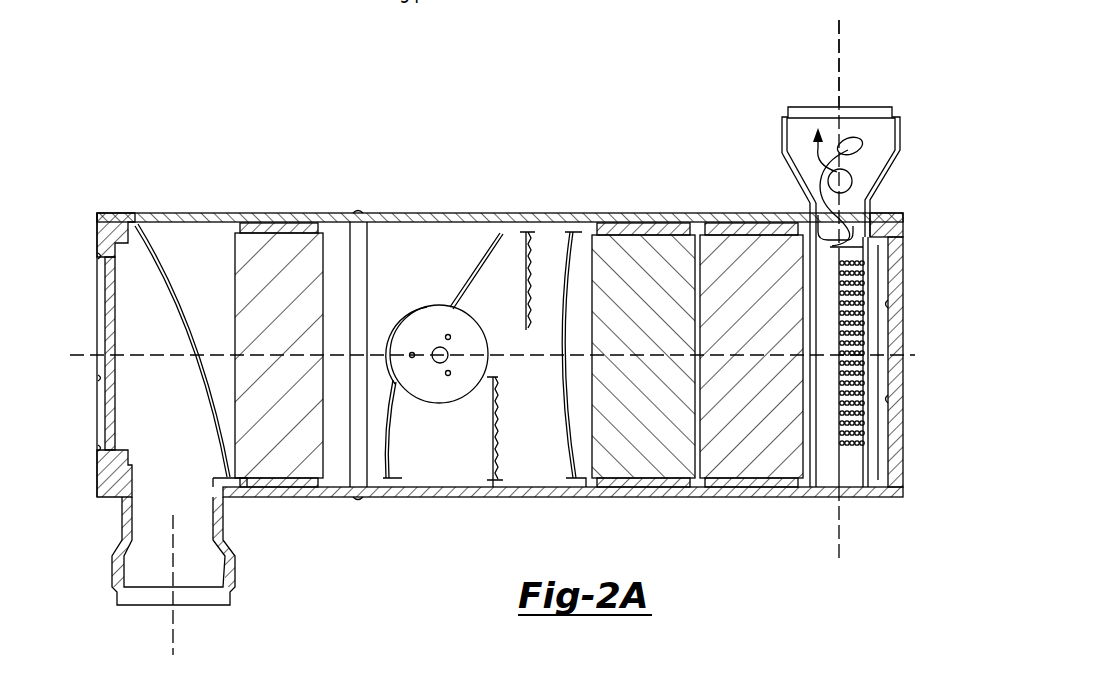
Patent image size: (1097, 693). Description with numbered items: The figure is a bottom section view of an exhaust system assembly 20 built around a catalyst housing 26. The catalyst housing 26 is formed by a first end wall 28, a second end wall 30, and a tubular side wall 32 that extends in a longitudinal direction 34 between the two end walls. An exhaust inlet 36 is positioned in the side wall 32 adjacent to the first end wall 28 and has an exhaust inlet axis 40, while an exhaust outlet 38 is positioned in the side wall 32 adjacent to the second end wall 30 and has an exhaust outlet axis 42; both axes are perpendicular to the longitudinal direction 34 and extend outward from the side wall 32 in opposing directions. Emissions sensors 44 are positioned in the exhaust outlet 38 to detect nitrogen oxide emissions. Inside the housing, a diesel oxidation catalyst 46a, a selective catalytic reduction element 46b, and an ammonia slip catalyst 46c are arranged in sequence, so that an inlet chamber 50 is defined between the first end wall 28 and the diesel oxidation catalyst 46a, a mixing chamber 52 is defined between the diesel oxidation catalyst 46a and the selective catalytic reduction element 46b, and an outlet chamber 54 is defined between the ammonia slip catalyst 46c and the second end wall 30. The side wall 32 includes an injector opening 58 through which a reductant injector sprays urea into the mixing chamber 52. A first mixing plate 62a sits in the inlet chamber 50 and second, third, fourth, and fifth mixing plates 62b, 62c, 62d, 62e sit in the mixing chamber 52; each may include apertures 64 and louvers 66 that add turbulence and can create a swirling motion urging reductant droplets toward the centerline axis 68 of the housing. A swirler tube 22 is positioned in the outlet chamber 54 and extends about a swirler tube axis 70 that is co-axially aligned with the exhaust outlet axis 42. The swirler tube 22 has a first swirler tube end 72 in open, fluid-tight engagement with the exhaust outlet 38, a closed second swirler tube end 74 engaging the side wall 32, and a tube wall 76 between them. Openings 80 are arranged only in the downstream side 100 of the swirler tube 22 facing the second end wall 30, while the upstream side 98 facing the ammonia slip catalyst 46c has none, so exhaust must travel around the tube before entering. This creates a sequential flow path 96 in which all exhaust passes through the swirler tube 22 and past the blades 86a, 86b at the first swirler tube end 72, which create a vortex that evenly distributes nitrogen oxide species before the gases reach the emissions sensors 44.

The exhaust system assembly 20 is at (186, 159).
The swirler tube 22 is at (822, 492).
The catalyst housing 26 is at (90, 210).
The first end wall 28 is at (104, 302).
The second end wall 30 is at (897, 332).
The side wall 32 is at (211, 213).
The longitudinal direction 34 is at (445, 541).
The exhaust inlet 36 is at (234, 558).
The exhaust outlet 38 is at (880, 190).
The exhaust inlet axis 40 is at (175, 620).
The exhaust outlet axis 42 is at (838, 38).
The swirler tube axis 70 is at (788, 53).
The emissions sensors 44 is at (895, 147).
The diesel oxidation catalyst 46a is at (283, 248).
The selective catalytic reduction element 46b is at (645, 250).
The ammonia slip catalyst 46c is at (720, 250).
The inlet chamber 50 is at (152, 426).
The mixing chamber 52 is at (421, 460).
The outlet chamber 54 is at (877, 270).
The injector opening 58 is at (425, 345).
The first mixing plate 62a is at (163, 281).
The second mixing plate 62b is at (466, 288).
The third mixing plate 62c is at (503, 456).
The fourth mixing plate 62d is at (525, 268).
The fifth mixing plate 62e is at (567, 270).
The apertures 64 is at (177, 330).
The louvers 66 is at (527, 320).
The centerline axis 68 is at (88, 357).
The first swirler tube end 72 is at (806, 200).
The second swirler tube end 74 is at (883, 478).
The tube wall 76 is at (815, 475).
The openings 80 is at (858, 325).
The first blade 86a is at (862, 248).
The second blade 86b is at (888, 224).
The sequential flow path 96 is at (822, 195).
The upstream side 98 is at (805, 421).
The downstream side 100 is at (874, 380).